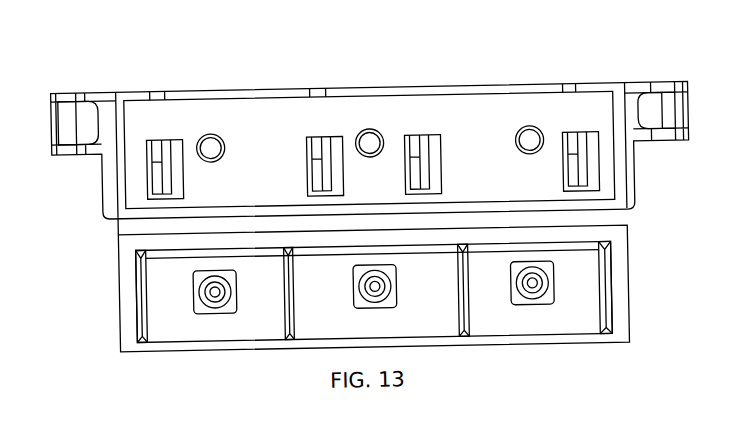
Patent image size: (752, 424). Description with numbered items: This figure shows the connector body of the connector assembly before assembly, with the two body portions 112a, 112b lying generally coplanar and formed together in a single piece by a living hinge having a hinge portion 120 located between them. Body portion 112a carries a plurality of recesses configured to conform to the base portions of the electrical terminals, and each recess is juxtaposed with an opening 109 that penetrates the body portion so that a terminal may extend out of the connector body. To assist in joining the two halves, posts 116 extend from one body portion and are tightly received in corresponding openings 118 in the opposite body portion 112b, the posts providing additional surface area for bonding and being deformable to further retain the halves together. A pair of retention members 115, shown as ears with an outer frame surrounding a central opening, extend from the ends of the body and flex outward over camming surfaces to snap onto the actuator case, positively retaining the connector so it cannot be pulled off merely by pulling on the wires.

The opening 109 is at (173, 136).
The body portion 112a is at (380, 88).
The body portion 112b is at (626, 292).
The retention member 115 is at (69, 88).
The post 116 is at (212, 131).
The opening 118 is at (217, 294).
The hinge portion 120 is at (127, 220).